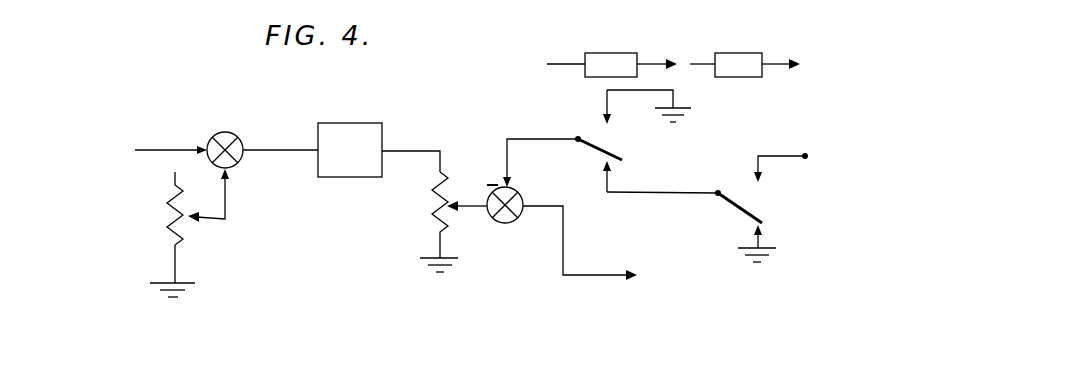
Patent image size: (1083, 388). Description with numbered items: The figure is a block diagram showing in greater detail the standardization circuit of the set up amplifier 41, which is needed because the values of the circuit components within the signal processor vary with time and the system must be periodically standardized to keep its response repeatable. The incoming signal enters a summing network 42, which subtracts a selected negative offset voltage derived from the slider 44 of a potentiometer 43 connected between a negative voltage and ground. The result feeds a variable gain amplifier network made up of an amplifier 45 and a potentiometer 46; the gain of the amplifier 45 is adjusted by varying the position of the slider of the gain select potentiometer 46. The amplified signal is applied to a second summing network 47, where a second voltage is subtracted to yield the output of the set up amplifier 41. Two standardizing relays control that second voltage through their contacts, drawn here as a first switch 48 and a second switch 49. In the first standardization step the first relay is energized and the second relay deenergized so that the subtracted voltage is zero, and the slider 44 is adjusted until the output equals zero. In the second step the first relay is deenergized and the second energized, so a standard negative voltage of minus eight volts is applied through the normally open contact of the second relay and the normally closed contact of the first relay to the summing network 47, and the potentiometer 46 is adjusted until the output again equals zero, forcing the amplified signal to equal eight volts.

The set up amplifier 41 is at (269, 272).
The summing network 42 is at (236, 136).
The potentiometer 43 is at (183, 243).
The slider 44 is at (215, 222).
The amplifier 45 is at (350, 122).
The potentiometer 46 is at (447, 208).
The summing network 47 is at (520, 193).
The relay switch 48 is at (597, 147).
The relay switch 49 is at (738, 208).